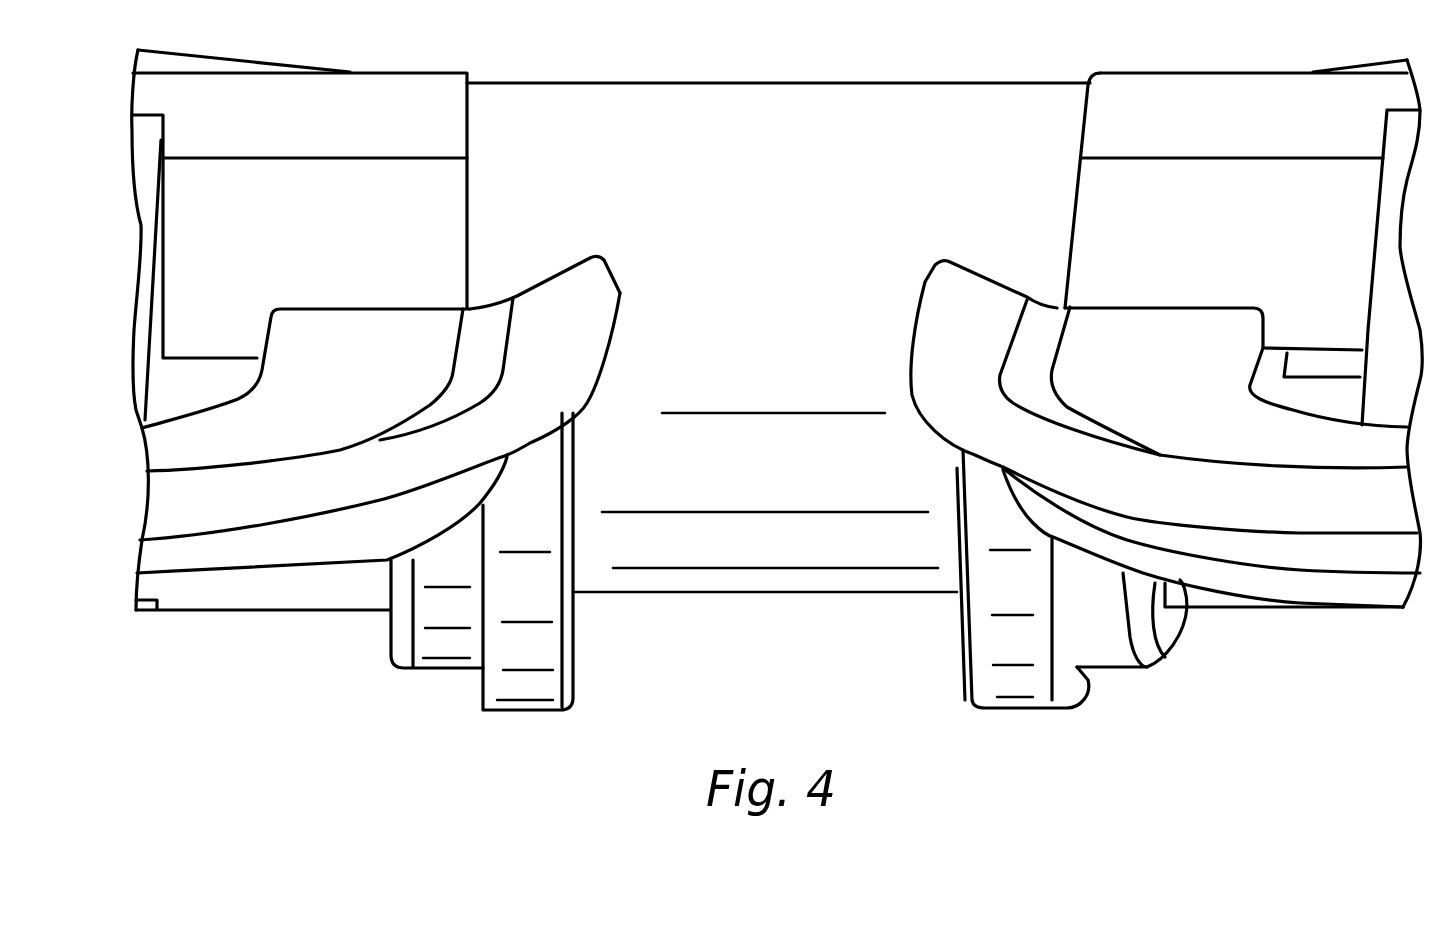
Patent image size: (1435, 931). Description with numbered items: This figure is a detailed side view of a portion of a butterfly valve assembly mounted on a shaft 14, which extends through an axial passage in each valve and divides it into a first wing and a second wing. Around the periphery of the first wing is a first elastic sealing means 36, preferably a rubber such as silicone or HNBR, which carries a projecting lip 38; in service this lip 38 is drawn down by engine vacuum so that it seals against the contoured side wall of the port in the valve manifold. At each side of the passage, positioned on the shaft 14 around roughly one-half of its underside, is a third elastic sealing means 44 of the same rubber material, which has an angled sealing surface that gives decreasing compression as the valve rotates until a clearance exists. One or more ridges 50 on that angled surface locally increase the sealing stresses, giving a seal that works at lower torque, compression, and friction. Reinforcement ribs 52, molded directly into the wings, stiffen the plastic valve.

The shaft 14 is at (812, 83).
The first elastic sealing means 36 is at (263, 562).
The projecting lip 38 is at (943, 262).
The third elastic sealing means 44 is at (443, 670).
The ridge 50 is at (577, 697).
The reinforcement ribs 52 is at (160, 275).